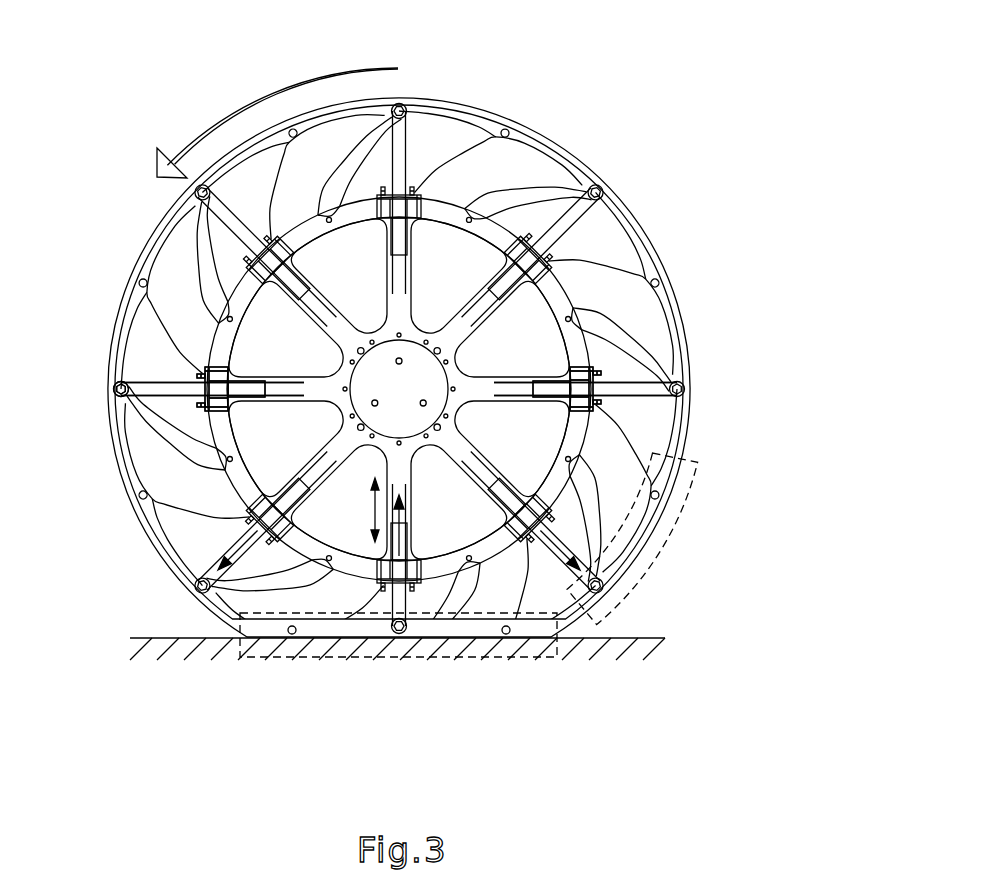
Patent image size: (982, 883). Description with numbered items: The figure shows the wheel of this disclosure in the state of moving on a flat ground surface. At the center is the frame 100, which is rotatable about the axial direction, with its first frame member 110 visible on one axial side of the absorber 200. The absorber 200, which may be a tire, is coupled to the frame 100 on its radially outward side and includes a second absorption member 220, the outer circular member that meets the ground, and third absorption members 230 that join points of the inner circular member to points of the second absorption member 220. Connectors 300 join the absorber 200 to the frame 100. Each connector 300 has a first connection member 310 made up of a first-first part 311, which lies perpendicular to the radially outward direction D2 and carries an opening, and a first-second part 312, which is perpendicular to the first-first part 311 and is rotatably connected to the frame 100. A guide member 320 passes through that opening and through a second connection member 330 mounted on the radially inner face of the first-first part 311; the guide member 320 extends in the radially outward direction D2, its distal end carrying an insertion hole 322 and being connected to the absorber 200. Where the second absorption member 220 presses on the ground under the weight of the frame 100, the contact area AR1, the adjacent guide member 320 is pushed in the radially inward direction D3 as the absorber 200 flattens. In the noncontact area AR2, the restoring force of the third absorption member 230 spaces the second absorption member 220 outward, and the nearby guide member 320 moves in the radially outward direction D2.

The frame 100 is at (760, 312).
The first frame member 110 is at (560, 323).
The absorber 200 is at (445, 100).
The second absorption member 220 is at (538, 137).
The third absorption member 230 is at (466, 148).
The connector 300 is at (592, 231).
The first connection member 310 is at (592, 392).
The (1-1)-th part 311 is at (393, 590).
The (1-2)-th part 312 is at (408, 592).
The guide member 320 is at (575, 215).
The insertion hole 322 is at (112, 389).
The second connection member 330 is at (530, 255).
The contact area AR1 is at (522, 660).
The noncontact area AR2 is at (670, 545).
The radially outward direction D2 is at (360, 528).
The radially inward direction D3 is at (360, 490).